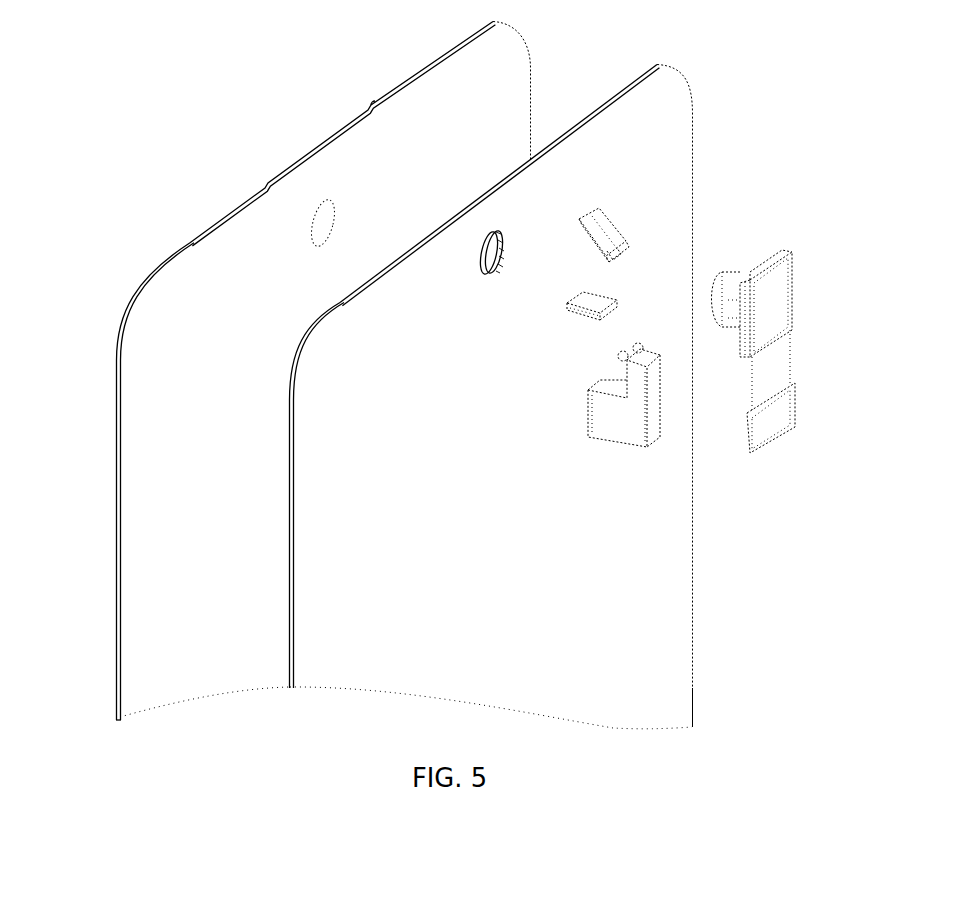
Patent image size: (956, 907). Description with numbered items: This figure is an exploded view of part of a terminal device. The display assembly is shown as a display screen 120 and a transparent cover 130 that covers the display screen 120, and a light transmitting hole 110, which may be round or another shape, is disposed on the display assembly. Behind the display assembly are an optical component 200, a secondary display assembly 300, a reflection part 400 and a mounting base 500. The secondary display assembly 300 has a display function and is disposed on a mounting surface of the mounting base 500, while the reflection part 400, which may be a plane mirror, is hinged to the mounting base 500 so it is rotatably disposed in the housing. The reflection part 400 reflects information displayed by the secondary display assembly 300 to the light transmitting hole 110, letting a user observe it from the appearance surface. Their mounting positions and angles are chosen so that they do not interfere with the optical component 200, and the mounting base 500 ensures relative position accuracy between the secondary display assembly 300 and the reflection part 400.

The light transmitting hole 110 is at (489, 247).
The display screen 120 is at (377, 318).
The transparent cover 130 is at (223, 247).
The optical component 200 is at (773, 298).
The secondary display assembly 300 is at (590, 305).
The reflection part 400 is at (608, 223).
The mounting base 500 is at (628, 425).